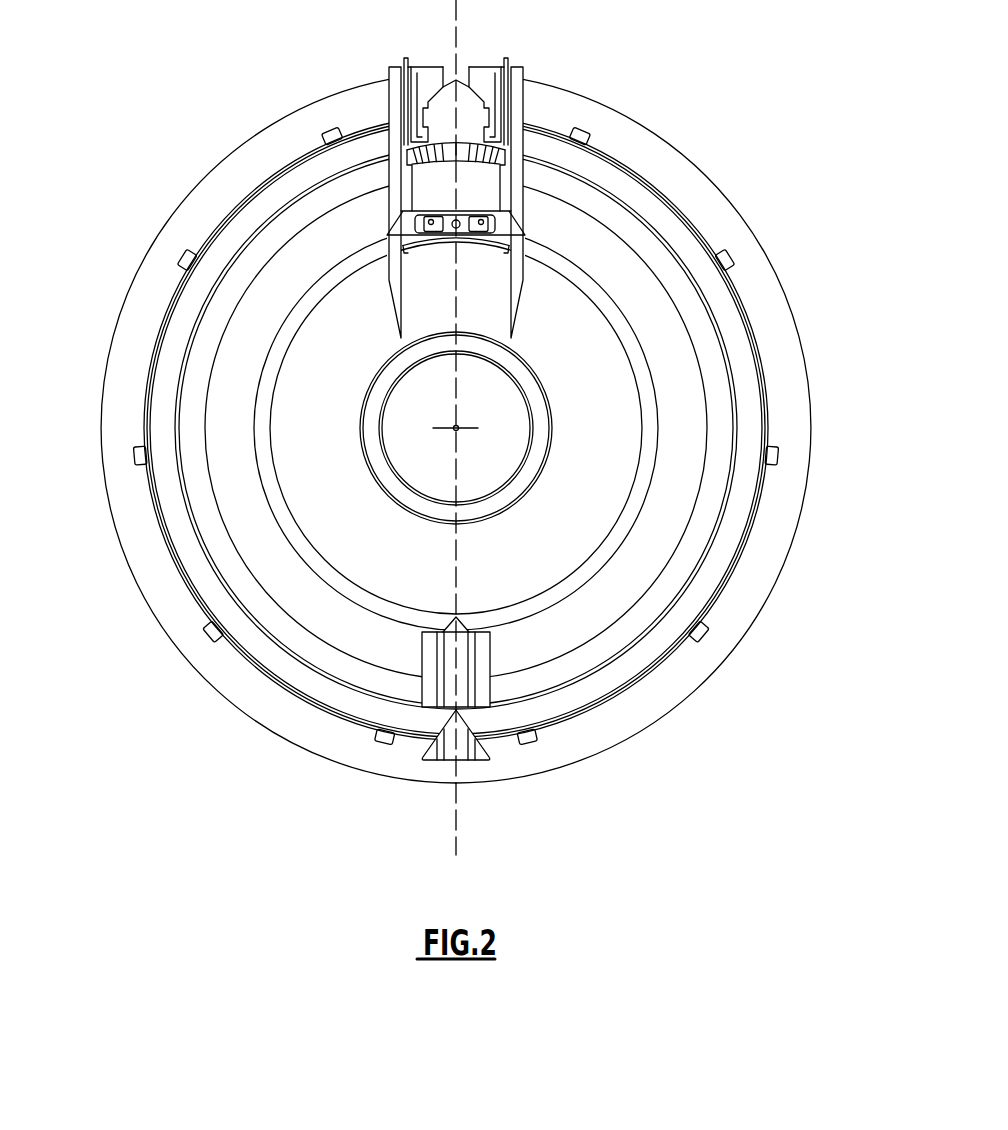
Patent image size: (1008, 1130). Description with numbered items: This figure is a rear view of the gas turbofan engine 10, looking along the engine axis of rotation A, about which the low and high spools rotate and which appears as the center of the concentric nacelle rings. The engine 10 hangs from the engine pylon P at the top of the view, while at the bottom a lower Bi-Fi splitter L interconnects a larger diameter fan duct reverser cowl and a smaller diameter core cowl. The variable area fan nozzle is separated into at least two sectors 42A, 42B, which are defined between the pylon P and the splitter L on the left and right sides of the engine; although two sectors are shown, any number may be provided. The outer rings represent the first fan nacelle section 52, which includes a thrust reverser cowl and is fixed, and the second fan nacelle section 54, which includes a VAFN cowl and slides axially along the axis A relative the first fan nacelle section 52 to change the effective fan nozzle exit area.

The gas turbofan engine 10 is at (464, 427).
The first VAFN sector 42A is at (101, 301).
The second VAFN sector 42B is at (819, 317).
The first fan nacelle section 52 is at (709, 216).
The second fan nacelle section 54 is at (753, 421).
The engine pylon P is at (521, 84).
The lower Bi-Fi splitter L is at (468, 692).
The engine axis of rotation A is at (458, 432).